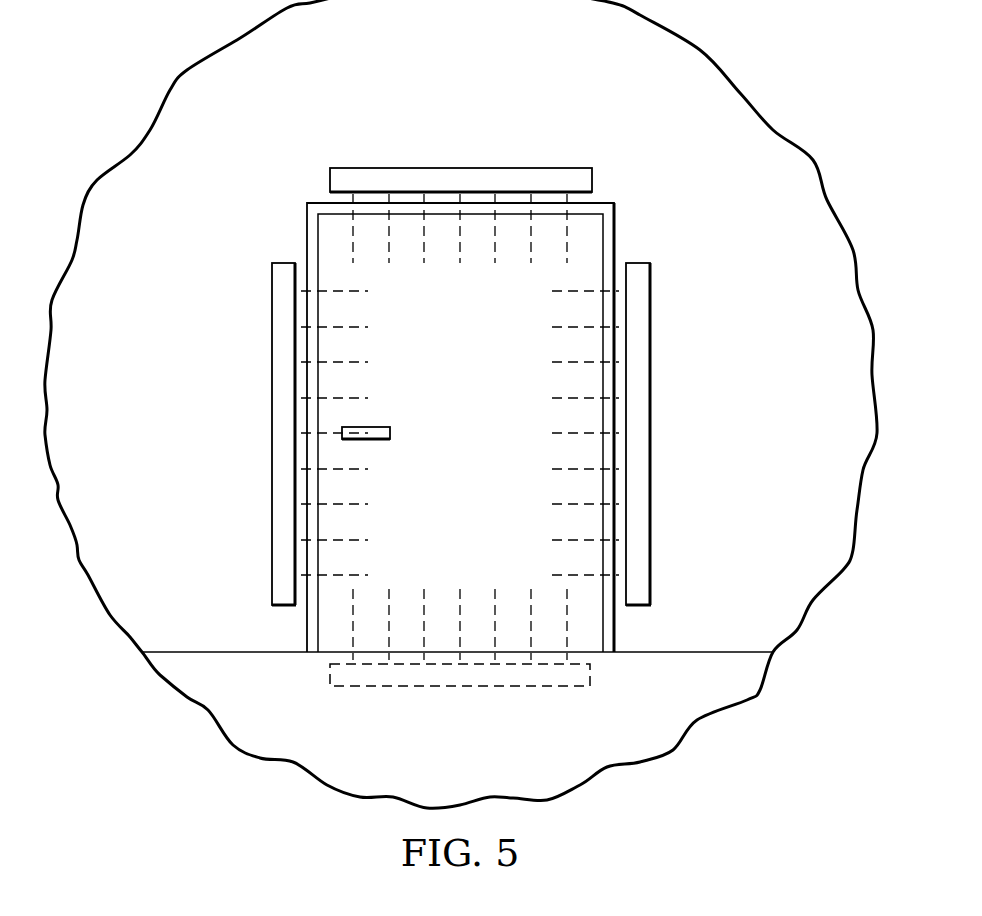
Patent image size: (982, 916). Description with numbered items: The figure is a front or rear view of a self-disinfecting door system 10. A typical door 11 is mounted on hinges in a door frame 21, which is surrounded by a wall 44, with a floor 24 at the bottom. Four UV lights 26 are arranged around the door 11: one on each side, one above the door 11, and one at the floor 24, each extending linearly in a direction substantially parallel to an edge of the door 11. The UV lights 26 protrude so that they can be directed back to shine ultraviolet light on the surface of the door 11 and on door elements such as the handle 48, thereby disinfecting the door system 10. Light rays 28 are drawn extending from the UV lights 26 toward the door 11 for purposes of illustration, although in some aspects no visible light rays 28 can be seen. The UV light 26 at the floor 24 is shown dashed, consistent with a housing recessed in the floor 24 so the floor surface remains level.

The door system 10 is at (587, 85).
The door 11 is at (510, 447).
The door frame 21 is at (605, 203).
The floor 24 is at (292, 713).
The UV lights 26 is at (405, 167).
The light rays 28 is at (391, 244).
The wall 44 is at (740, 237).
The handle 48 is at (391, 433).